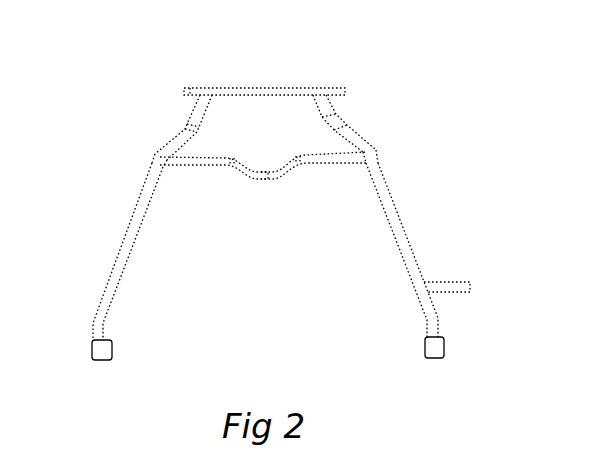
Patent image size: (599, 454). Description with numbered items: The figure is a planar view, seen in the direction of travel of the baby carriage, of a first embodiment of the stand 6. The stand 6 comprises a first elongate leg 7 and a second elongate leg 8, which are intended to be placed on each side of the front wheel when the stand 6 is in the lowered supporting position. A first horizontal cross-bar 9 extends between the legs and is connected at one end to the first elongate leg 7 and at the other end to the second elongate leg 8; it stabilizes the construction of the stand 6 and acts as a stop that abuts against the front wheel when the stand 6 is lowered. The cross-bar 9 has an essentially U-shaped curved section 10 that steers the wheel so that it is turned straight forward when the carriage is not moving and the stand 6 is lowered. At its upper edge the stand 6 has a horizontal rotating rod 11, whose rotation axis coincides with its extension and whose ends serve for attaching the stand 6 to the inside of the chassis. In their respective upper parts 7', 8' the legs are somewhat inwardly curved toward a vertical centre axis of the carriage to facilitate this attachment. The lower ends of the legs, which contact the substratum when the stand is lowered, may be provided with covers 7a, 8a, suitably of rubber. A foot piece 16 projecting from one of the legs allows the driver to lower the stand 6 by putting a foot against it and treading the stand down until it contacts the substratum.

The stand 6 is at (444, 142).
The first elongate leg 7 is at (122, 249).
The upper part of first elongate leg 7' is at (166, 114).
The cover 7a is at (97, 353).
The second elongate leg 8 is at (412, 245).
The upper part of second elongate leg 8' is at (360, 104).
The cover 8a is at (446, 350).
The first horizontal cross-bar 9 is at (343, 158).
The curved section 10 is at (259, 172).
The horizontal rotating rod 11 is at (279, 88).
The foot piece 16 is at (445, 286).